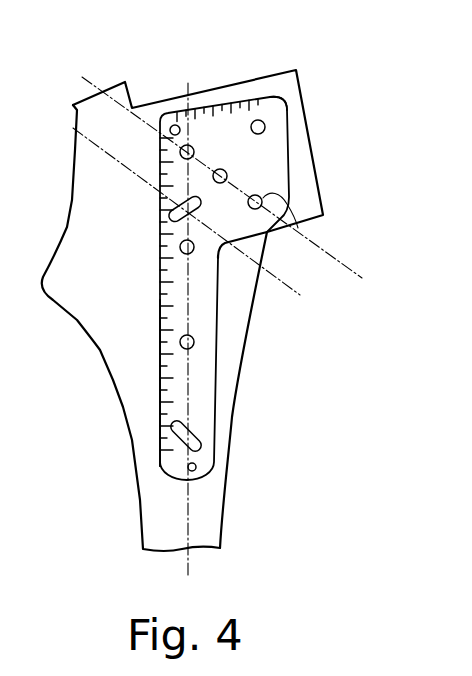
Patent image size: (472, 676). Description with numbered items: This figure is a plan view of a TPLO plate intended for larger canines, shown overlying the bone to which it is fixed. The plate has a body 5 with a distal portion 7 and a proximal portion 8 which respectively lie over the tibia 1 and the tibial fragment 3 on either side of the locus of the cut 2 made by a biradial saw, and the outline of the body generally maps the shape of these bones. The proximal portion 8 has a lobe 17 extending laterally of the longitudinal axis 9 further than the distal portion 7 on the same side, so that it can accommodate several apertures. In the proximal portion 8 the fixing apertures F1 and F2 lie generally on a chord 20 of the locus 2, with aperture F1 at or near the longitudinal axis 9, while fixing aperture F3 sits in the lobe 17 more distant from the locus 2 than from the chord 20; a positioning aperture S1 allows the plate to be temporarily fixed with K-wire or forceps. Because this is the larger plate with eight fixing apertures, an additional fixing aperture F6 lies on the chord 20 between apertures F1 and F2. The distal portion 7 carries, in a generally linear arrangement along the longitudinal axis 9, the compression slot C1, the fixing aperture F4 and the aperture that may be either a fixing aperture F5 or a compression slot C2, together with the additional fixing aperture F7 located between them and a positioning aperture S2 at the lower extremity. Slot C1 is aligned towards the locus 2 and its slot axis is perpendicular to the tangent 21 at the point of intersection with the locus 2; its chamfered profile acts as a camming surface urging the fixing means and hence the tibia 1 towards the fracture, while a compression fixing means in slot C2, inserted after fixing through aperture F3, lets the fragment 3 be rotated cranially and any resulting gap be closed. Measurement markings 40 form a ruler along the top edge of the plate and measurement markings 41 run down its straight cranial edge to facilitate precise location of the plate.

The tibia 1 is at (82, 233).
The locus of the cut 2 is at (140, 107).
The tibial fragment 3 is at (296, 182).
The body 5 is at (172, 393).
The distal portion 7 is at (160, 288).
The proximal portion 8 is at (269, 135).
The longitudinal axis 9 is at (188, 573).
The lobe 17 is at (235, 212).
The chord 20 is at (337, 258).
The tangent 21 is at (113, 160).
The measurement markings 40 is at (233, 104).
The measurement markings 41 is at (158, 338).
The compression slot C1 is at (167, 217).
The compression slot C2 is at (197, 433).
The positioning aperture S1 is at (175, 125).
The positioning aperture S2 is at (197, 467).
The fixing aperture F1 is at (190, 146).
The fixing aperture F2 is at (323, 214).
The fixing aperture F3 is at (296, 110).
The fixing aperture F4 is at (194, 247).
The fixing aperture F5 is at (194, 342).
The additional fixing aperture F6 is at (226, 171).
The additional fixing aperture F7 is at (251, 446).